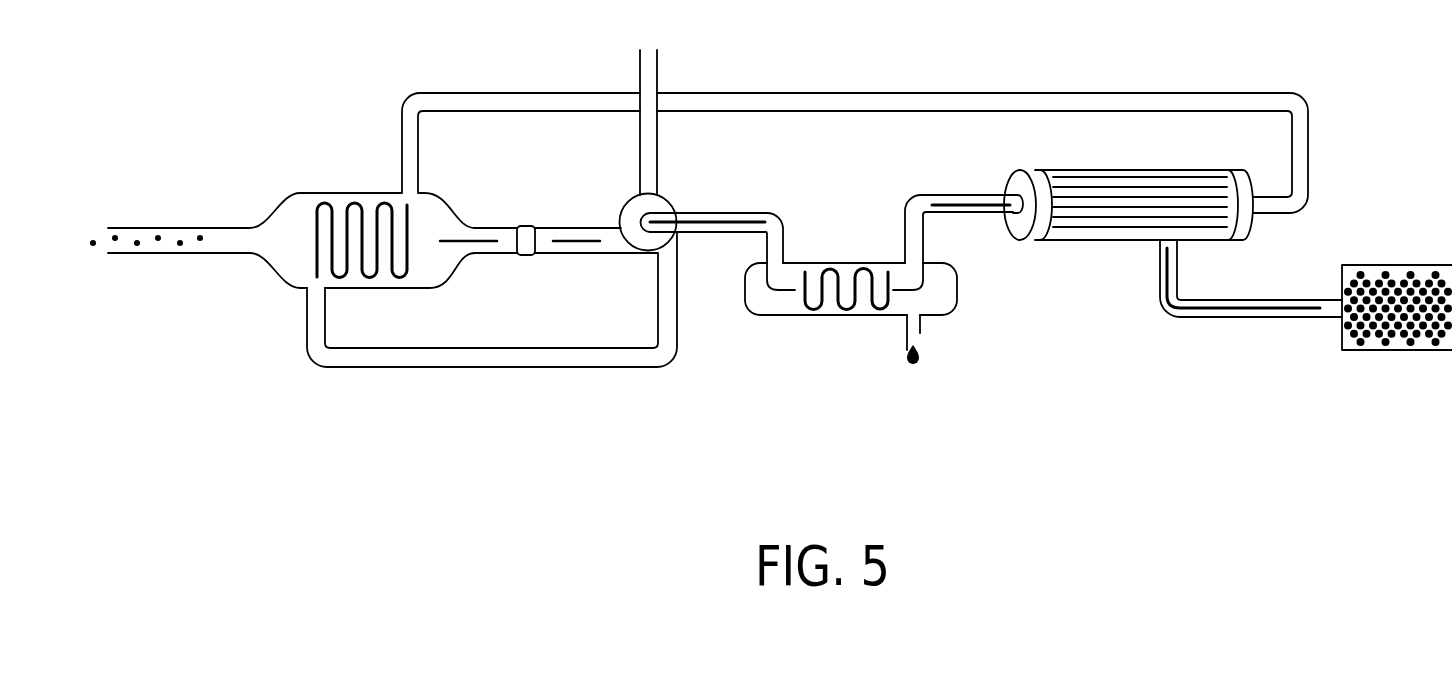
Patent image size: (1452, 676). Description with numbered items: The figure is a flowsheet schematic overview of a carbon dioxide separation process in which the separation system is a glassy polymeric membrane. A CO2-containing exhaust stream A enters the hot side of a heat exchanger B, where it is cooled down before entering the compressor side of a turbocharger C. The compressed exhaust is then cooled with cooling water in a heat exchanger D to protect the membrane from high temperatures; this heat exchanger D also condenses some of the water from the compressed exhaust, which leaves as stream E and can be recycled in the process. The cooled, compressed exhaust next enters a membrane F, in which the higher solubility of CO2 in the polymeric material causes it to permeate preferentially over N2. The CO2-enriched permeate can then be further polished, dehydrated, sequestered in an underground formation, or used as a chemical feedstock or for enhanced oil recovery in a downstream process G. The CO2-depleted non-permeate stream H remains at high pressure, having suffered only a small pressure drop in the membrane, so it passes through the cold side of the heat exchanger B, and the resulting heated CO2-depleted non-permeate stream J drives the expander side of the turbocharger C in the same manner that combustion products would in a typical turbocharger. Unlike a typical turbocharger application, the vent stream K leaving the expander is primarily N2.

The CO2-containing exhaust stream A is at (195, 240).
The heat exchanger B is at (387, 226).
The turbocharger C is at (641, 215).
The heat exchanger D is at (851, 275).
The stream E is at (920, 333).
The membrane F is at (1128, 190).
The downstream process G is at (1397, 293).
The CO2-depleted non-permeate stream H is at (470, 93).
The heated CO2-depleted non-permeate stream J is at (502, 367).
The vent stream K is at (638, 75).